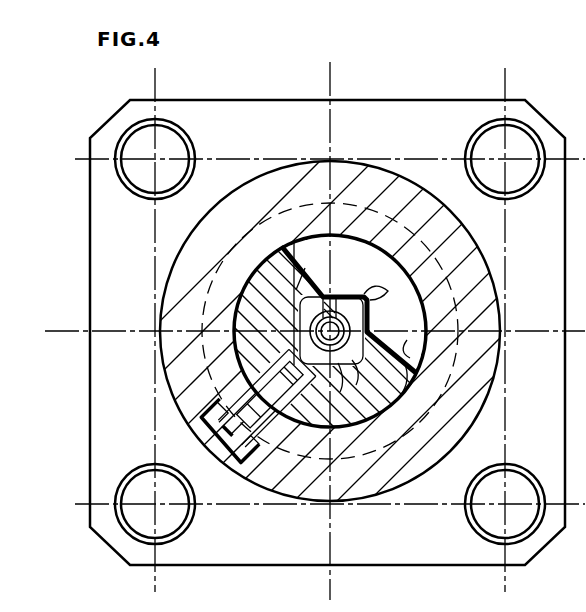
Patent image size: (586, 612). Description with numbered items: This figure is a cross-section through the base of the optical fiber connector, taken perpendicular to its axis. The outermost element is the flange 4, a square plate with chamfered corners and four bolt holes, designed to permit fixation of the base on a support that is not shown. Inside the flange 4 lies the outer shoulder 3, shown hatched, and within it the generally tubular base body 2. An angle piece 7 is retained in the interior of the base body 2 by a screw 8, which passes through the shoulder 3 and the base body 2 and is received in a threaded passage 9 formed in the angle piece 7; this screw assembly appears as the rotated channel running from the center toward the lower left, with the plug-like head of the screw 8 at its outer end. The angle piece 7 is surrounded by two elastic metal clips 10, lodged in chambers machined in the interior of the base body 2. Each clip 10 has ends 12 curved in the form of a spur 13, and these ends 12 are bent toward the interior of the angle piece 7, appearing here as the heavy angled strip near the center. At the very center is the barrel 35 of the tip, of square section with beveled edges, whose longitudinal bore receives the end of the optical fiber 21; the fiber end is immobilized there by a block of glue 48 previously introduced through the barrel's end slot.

The base body 2 is at (366, 438).
The outer shoulder 3 is at (476, 271).
The flange 4 is at (258, 117).
The angle piece 7 is at (292, 476).
The screw 8 is at (222, 452).
The threaded passage 9 is at (290, 362).
The elastic metal clip 10 is at (402, 398).
The clip end 12 is at (305, 268).
The spur 13 is at (349, 310).
The optical fiber 21 is at (338, 365).
The barrel 35 is at (350, 357).
The block of glue 48 is at (297, 301).